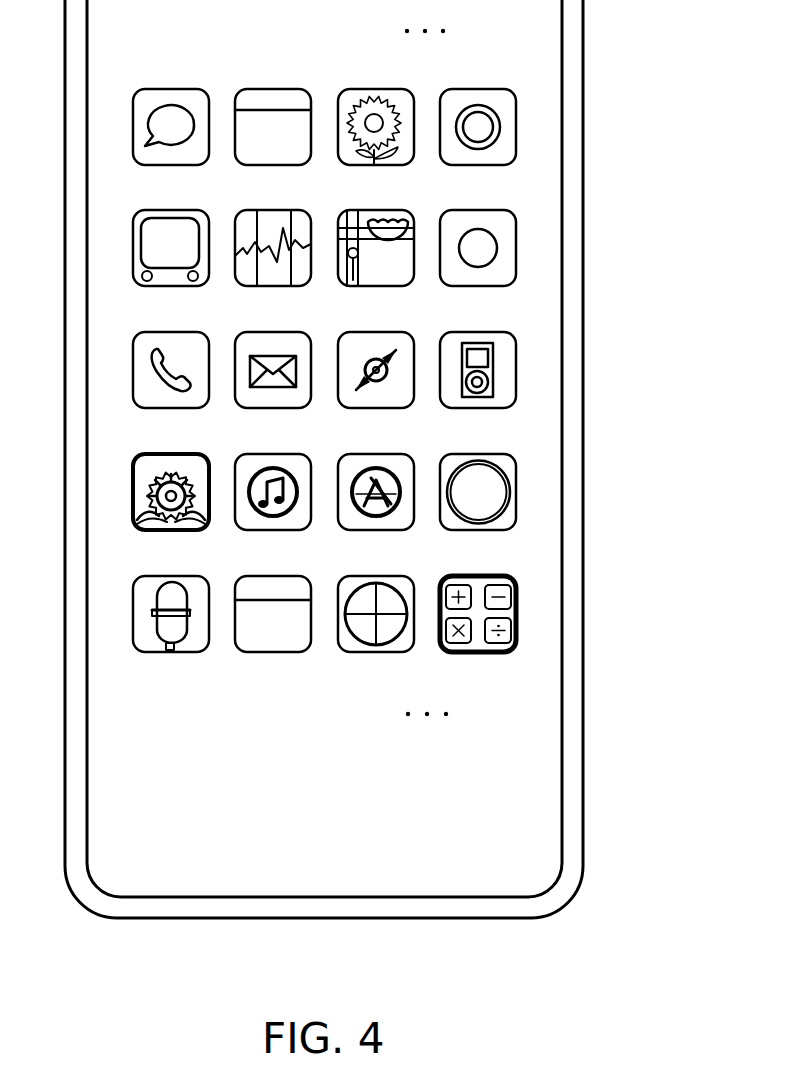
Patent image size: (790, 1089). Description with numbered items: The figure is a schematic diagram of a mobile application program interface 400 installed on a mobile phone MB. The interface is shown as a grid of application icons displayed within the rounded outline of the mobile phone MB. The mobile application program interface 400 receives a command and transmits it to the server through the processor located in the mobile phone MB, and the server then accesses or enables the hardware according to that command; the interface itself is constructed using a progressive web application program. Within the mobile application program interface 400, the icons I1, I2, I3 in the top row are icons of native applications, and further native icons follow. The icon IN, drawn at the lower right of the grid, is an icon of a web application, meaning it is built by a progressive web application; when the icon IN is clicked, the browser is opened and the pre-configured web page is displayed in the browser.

The mobile phone MB is at (585, 50).
The mobile application program interface 400 is at (528, 188).
The icon of native application I1 is at (170, 89).
The icon of native application I2 is at (273, 89).
The icon of native application I3 is at (375, 89).
The icon of web application IN is at (478, 654).